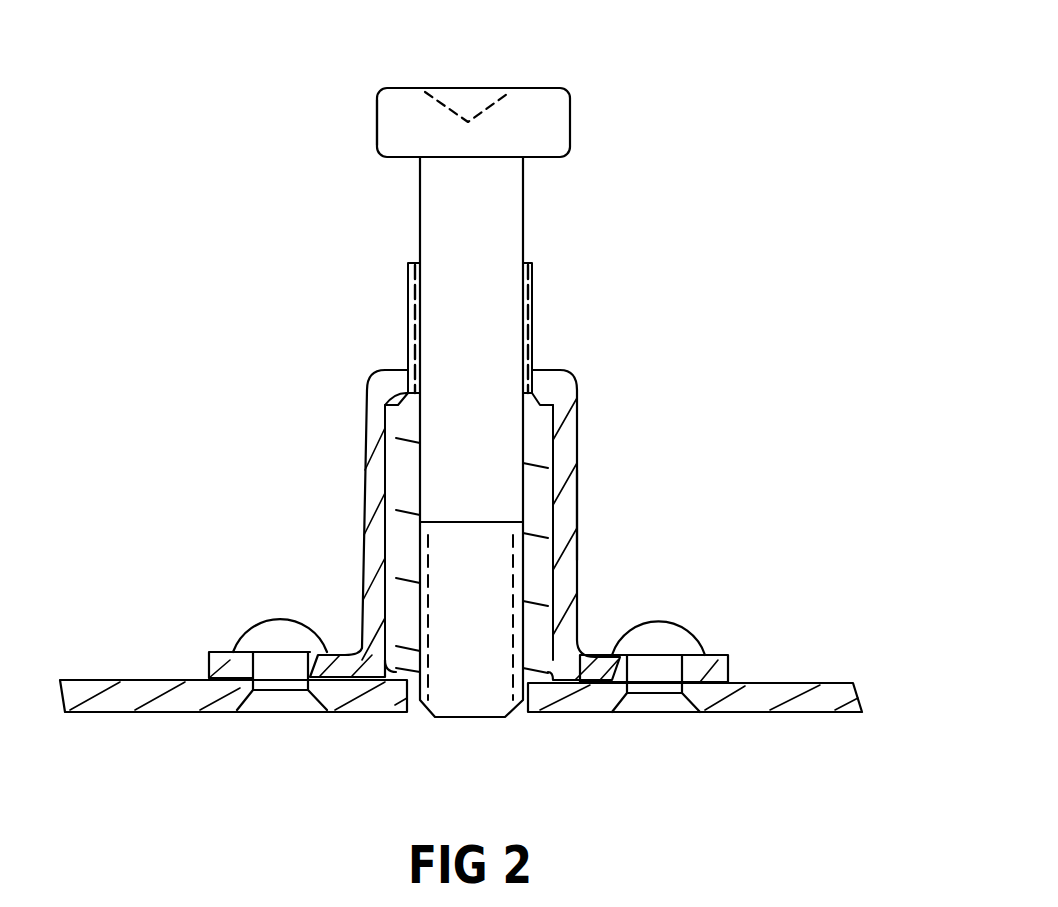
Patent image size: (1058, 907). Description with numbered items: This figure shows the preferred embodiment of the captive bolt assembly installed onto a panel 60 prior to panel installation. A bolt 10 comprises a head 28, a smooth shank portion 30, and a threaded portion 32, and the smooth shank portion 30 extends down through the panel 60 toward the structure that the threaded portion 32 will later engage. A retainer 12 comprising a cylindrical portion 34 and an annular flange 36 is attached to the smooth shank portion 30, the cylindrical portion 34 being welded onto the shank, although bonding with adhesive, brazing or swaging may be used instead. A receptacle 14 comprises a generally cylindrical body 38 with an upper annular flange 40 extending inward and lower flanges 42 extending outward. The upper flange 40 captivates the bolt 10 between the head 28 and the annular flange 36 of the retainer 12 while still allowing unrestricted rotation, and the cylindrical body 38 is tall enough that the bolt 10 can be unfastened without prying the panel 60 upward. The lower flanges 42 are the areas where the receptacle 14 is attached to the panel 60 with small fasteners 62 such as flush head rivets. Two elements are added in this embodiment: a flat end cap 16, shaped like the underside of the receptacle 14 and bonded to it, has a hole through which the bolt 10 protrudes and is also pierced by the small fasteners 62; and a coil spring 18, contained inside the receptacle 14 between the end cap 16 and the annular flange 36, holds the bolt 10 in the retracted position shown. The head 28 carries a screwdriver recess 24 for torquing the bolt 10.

The bolt 10 is at (563, 88).
The retainer 12 is at (410, 262).
The receptacle 14 is at (362, 505).
The flat end cap 16 is at (362, 617).
The coil spring 18 is at (545, 462).
The offset cruciform screwdriver recess 24 is at (505, 103).
The head 28 is at (378, 105).
The smooth shank portion 30 is at (525, 215).
The threaded portion 32 is at (525, 637).
The cylindrical portion 34 is at (410, 328).
The annular flange 36 is at (400, 408).
The cylindrical body 38 is at (582, 522).
The upper annular flange 40 is at (535, 370).
The lower flanges 42 is at (718, 655).
The panel 60 is at (808, 683).
The small fasteners 62 is at (268, 620).